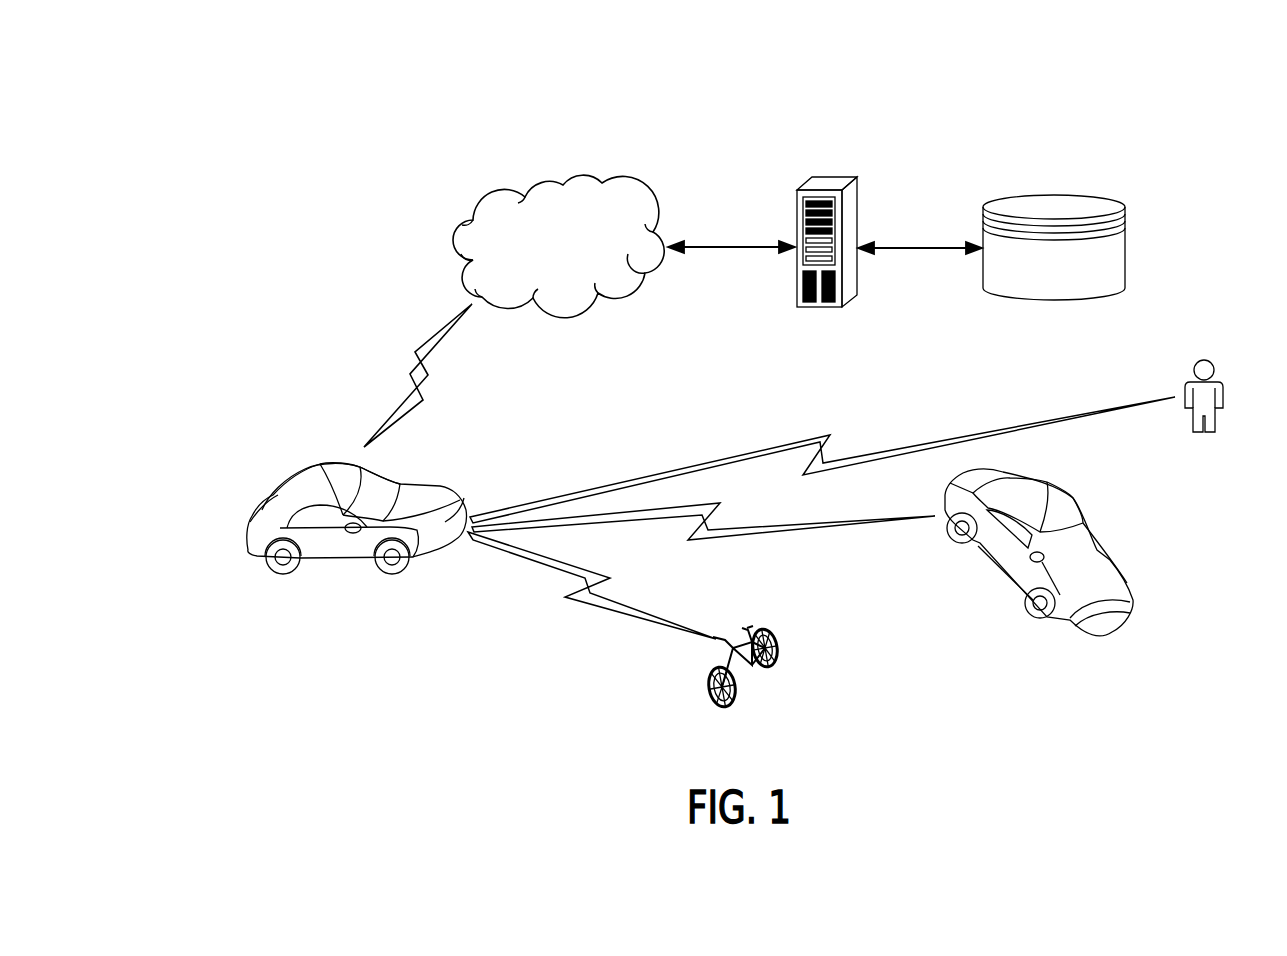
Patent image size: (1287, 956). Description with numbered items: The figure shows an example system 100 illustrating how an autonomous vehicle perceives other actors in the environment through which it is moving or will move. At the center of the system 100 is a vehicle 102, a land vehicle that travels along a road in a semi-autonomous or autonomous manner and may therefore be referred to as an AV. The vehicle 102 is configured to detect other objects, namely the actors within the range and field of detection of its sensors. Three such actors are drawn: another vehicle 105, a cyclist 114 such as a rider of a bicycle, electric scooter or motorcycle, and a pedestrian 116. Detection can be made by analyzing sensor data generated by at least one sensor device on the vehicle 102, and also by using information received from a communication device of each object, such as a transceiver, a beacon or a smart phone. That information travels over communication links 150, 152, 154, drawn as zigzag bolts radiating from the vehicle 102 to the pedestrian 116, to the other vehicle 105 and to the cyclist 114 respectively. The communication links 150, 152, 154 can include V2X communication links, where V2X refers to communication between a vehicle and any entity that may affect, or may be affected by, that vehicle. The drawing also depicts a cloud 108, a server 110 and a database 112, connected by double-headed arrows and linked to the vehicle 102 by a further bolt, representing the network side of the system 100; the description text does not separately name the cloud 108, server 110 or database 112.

The system 100 is at (243, 148).
The vehicle 102 is at (345, 563).
The another vehicle 105 is at (1030, 620).
The network 108 is at (494, 191).
The server 110 is at (832, 176).
The database 112 is at (996, 296).
The cyclist 114 is at (773, 672).
The pedestrian 116 is at (1199, 436).
The communication link 150 is at (736, 453).
The communication link 152 is at (832, 527).
The communication link 154 is at (611, 616).